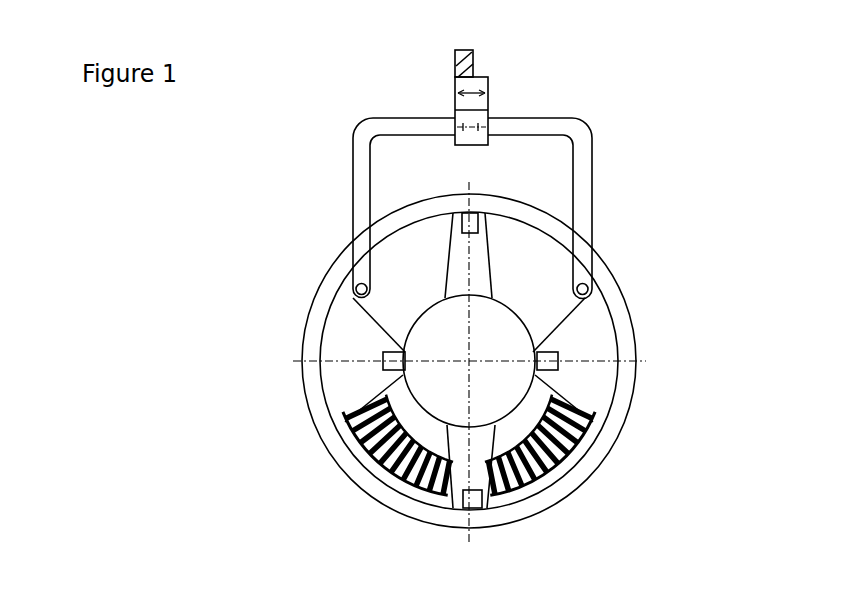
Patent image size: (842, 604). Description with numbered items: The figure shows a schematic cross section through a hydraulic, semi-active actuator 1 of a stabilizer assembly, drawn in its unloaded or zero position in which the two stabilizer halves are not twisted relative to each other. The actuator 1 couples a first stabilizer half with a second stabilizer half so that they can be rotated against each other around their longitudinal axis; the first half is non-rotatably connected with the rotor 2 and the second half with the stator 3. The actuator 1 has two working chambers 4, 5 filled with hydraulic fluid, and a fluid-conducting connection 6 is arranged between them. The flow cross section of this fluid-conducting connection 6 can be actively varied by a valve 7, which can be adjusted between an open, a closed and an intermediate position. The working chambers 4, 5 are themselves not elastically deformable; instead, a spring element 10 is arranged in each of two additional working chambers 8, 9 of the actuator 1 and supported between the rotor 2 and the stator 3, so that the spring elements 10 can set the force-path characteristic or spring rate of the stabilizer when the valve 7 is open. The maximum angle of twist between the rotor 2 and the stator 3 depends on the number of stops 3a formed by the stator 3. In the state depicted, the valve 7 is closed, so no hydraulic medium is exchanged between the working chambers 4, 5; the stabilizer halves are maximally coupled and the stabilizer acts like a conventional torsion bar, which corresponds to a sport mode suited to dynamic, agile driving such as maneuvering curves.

The actuator 1 is at (740, 105).
The rotor 2 is at (463, 252).
The stator 3 is at (345, 346).
The stops 3a is at (352, 377).
The working chamber 4 is at (427, 260).
The working chamber 5 is at (533, 250).
The fluid-conducting connection 6 is at (578, 173).
The valve 7 is at (475, 83).
The additional working chamber 8 is at (412, 488).
The additional working chamber 9 is at (548, 478).
The spring element 10 is at (343, 432).